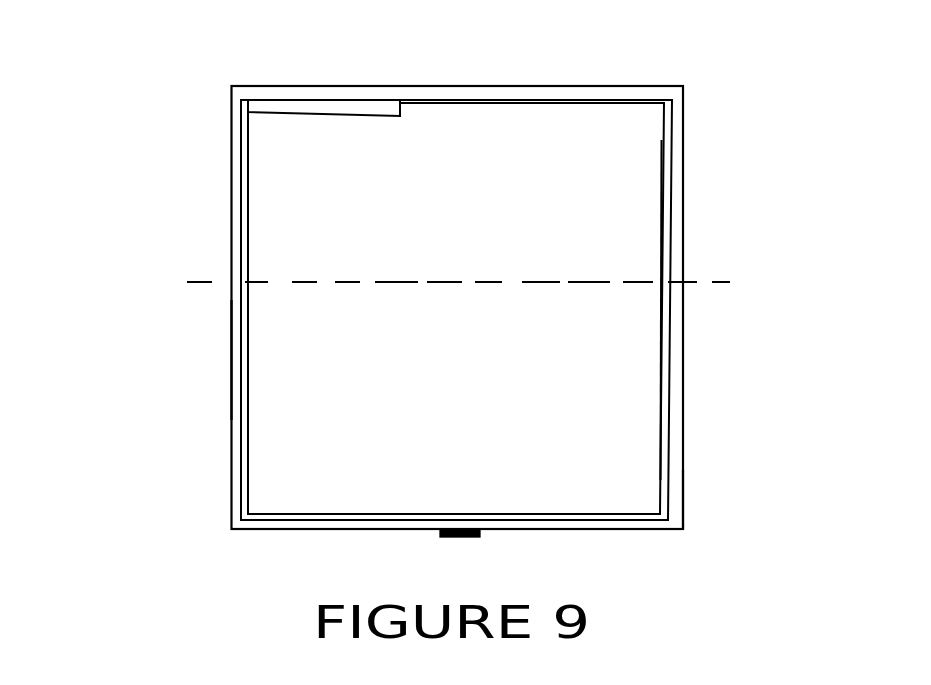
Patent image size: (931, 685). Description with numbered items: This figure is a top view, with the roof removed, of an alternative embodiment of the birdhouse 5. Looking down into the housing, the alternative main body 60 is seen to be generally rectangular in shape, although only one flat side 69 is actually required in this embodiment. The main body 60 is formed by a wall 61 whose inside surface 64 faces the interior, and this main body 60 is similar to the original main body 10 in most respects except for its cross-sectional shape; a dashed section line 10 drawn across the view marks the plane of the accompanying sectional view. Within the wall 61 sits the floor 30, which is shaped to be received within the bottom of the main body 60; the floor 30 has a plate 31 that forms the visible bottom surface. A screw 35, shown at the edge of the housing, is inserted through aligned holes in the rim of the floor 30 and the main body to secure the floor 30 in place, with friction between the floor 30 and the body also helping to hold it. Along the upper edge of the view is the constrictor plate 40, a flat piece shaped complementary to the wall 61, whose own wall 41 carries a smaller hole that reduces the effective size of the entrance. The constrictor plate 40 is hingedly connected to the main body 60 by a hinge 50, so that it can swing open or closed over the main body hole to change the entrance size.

The birdhouse 5 is at (148, 391).
The main body 10 is at (180, 282).
The floor 30 is at (664, 364).
The plate 31 is at (643, 400).
The screw 35 is at (448, 537).
The constrictor plate 40 is at (381, 105).
The wall 41 is at (364, 101).
The hinge 50 is at (398, 101).
The alternative main body 60 is at (229, 433).
The wall 61 is at (684, 509).
The inside surface 64 is at (633, 530).
The flat side 69 is at (601, 85).